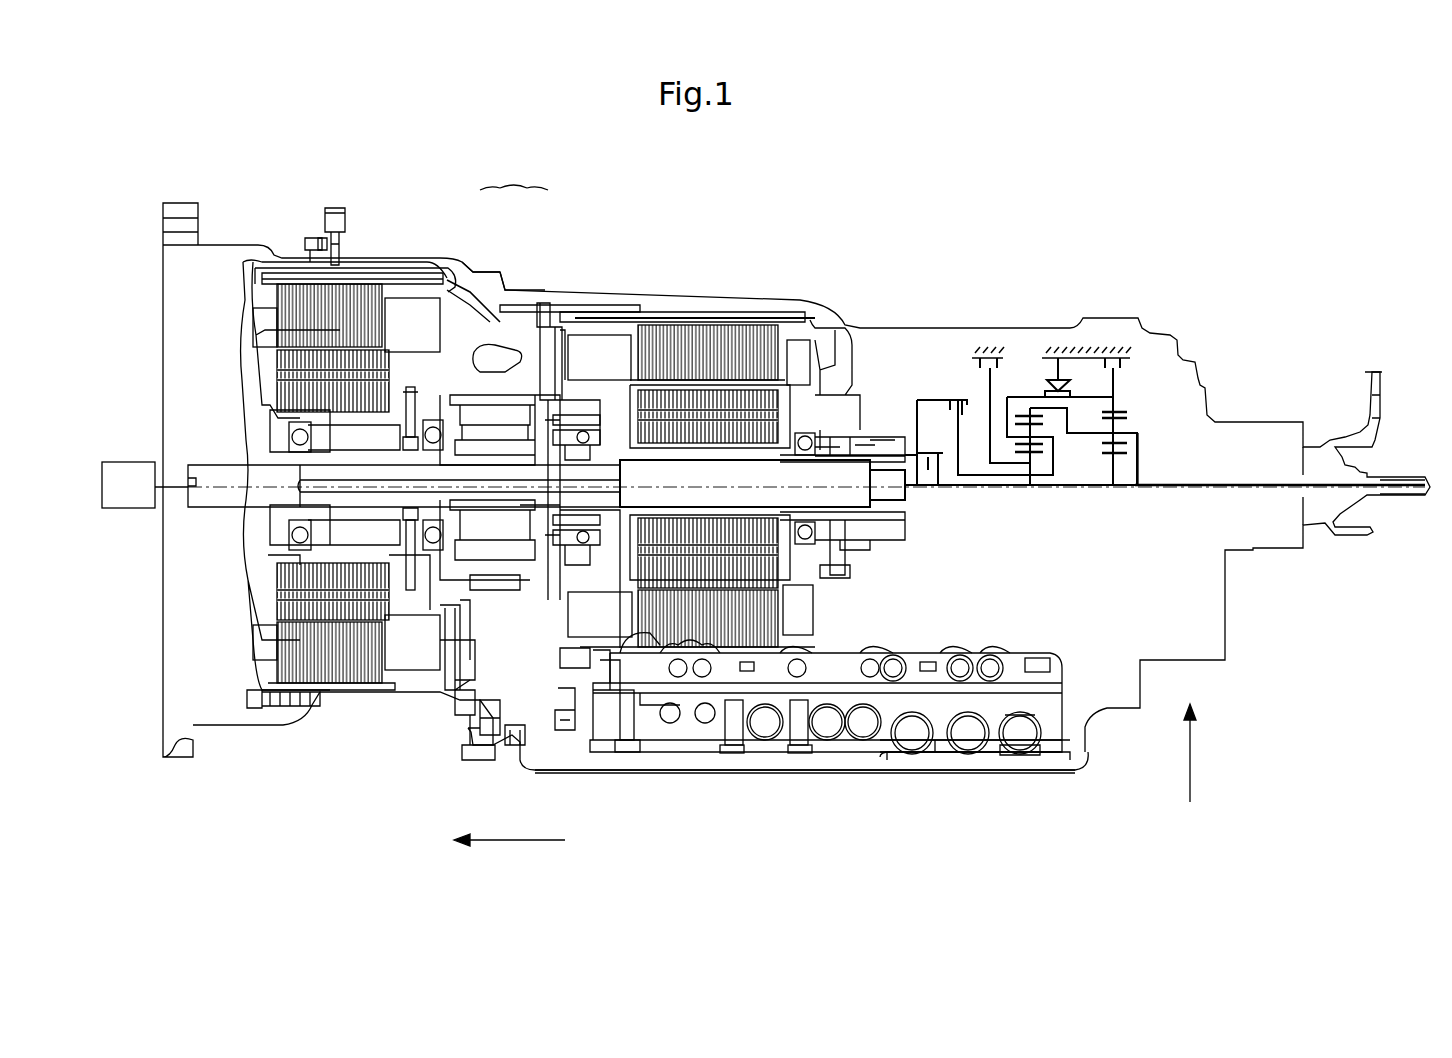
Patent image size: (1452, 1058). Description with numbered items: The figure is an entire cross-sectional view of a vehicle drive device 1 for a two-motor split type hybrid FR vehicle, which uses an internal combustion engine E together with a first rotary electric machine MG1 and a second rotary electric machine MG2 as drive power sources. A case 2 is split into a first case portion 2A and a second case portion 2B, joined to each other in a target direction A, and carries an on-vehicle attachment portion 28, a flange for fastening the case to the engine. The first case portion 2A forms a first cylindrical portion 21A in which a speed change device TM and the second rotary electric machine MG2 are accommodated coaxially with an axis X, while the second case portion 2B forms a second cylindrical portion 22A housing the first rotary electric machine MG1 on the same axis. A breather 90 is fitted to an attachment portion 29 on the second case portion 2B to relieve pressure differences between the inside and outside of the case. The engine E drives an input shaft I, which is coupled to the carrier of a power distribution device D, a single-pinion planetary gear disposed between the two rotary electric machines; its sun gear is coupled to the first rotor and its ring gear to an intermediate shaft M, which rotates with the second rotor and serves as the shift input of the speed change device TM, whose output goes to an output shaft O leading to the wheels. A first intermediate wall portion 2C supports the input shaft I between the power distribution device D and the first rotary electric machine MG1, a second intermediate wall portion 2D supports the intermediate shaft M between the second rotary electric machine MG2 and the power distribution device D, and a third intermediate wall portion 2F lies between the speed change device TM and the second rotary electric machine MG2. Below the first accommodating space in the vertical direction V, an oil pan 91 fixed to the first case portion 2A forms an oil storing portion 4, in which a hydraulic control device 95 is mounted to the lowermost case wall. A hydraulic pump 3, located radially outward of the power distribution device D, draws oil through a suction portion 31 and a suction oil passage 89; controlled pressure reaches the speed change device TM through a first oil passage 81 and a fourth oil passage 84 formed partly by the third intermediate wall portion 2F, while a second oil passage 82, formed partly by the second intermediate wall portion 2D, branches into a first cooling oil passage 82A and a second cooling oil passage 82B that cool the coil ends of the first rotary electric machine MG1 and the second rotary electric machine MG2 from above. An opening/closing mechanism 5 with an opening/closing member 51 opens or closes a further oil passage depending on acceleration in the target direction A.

The vehicle drive device 1 is at (244, 192).
The case 2 is at (514, 173).
The first case portion 2A is at (521, 276).
The second case portion 2B is at (477, 276).
The first intermediate wall portion 2C is at (468, 282).
The second intermediate wall portion 2D is at (560, 352).
The third intermediate wall portion 2F is at (848, 358).
The hydraulic pump 3 is at (478, 682).
The oil storing portion 4 is at (560, 776).
The opening/closing mechanism 5 is at (570, 720).
The first cylindrical portion 21A is at (1106, 586).
The second cylindrical portion 22A is at (409, 372).
The on-vehicle attachment portion 28 is at (163, 205).
The attachment portion 29 is at (320, 256).
The suction portion 31 is at (745, 770).
The opening/closing member 51 is at (520, 748).
The first oil passage 81 is at (838, 448).
The second oil passage 82 is at (497, 358).
The first cooling oil passage 82A is at (356, 285).
The second cooling oil passage 82B is at (690, 320).
The fourth oil passage 84 is at (850, 535).
The suction oil passage 89 is at (592, 665).
The breather 90 is at (345, 210).
The oil pan 91 is at (918, 772).
The hydraulic control device 95 is at (988, 762).
The first rotary electric machine MG1 is at (352, 690).
The second rotary electric machine MG2 is at (742, 322).
The speed change device TM is at (1020, 343).
The internal combustion engine E is at (145, 485).
The input shaft I is at (215, 480).
The intermediate shaft M is at (902, 495).
The output shaft O is at (1272, 487).
The power distribution device D is at (440, 645).
The axis X is at (620, 508).
The target direction A is at (509, 855).
The vertical direction V is at (1201, 753).